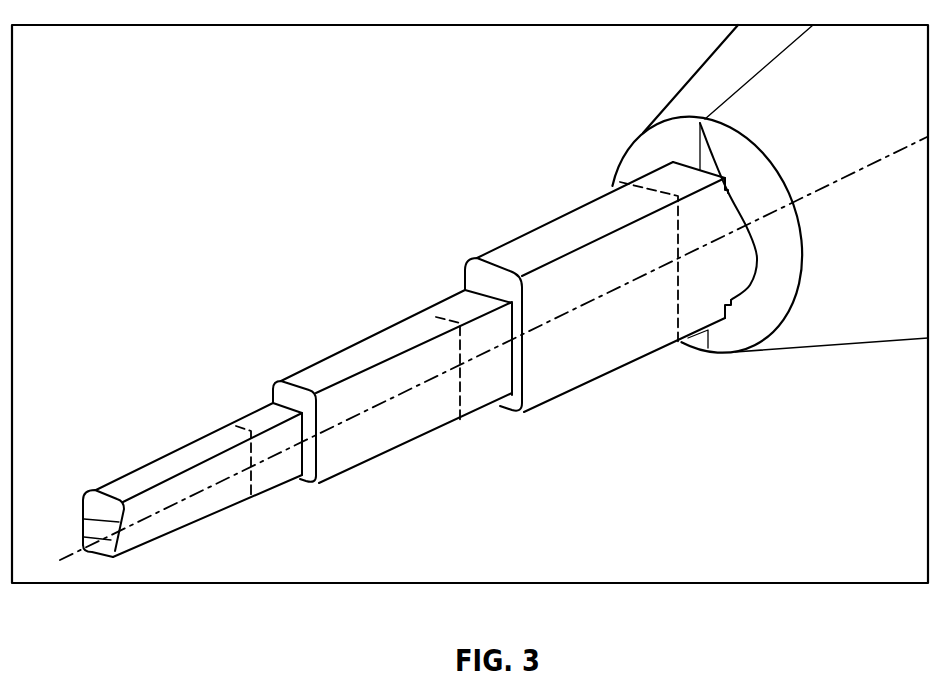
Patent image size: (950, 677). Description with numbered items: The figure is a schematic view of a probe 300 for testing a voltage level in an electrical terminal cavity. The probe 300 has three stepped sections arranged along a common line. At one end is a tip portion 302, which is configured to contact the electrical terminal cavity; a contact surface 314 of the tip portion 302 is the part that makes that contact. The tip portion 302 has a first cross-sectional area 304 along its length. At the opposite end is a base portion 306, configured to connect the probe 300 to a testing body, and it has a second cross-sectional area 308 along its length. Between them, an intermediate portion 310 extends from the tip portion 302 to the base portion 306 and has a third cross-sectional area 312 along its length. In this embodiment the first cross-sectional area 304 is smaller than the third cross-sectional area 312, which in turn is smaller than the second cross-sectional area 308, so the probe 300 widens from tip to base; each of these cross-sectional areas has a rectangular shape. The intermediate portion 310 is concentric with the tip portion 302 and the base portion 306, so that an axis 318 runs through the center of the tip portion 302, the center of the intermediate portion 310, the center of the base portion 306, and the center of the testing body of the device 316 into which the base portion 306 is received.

The probe 300 is at (212, 142).
The tip portion 302 is at (98, 487).
The first cross-sectional area 304 is at (253, 508).
The base portion 306 is at (545, 210).
The second cross-sectional area 308 is at (679, 357).
The intermediate portion 310 is at (340, 333).
The third cross-sectional area 312 is at (462, 428).
The contact surface 314 is at (105, 547).
The device 316 is at (710, 98).
The axis 318 is at (74, 546).